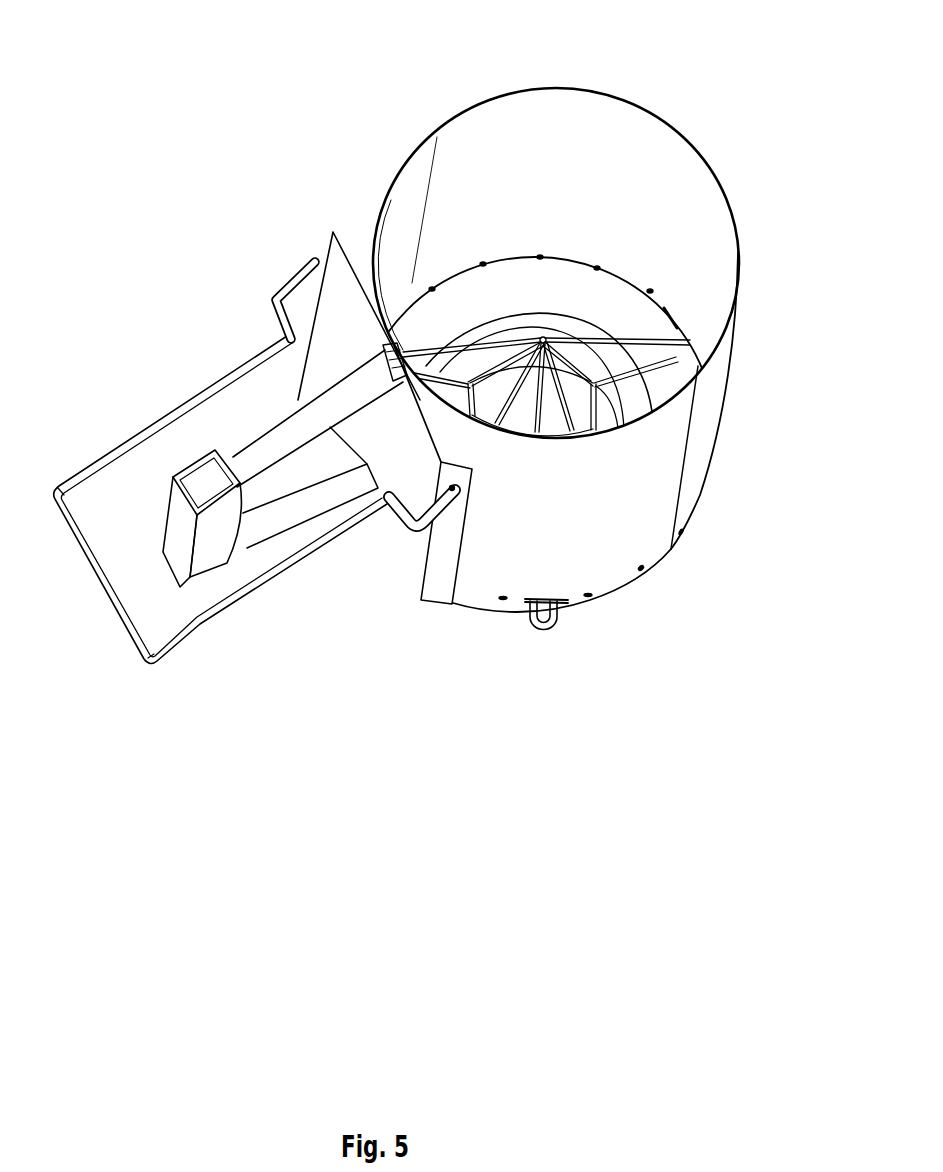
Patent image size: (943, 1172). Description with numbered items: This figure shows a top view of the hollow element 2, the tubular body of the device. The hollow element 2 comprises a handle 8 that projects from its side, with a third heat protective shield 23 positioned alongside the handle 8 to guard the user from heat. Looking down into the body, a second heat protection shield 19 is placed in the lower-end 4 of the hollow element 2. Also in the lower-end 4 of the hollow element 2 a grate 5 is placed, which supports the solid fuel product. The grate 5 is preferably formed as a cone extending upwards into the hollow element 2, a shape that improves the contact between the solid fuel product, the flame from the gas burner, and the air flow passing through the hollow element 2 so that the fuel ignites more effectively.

The hollow element 2 is at (608, 491).
The lower-end 4 is at (688, 493).
The grate 5 is at (532, 328).
The handle 8 is at (188, 548).
The second heat protection shield 19 is at (452, 292).
The third heat protective shield 23 is at (309, 326).